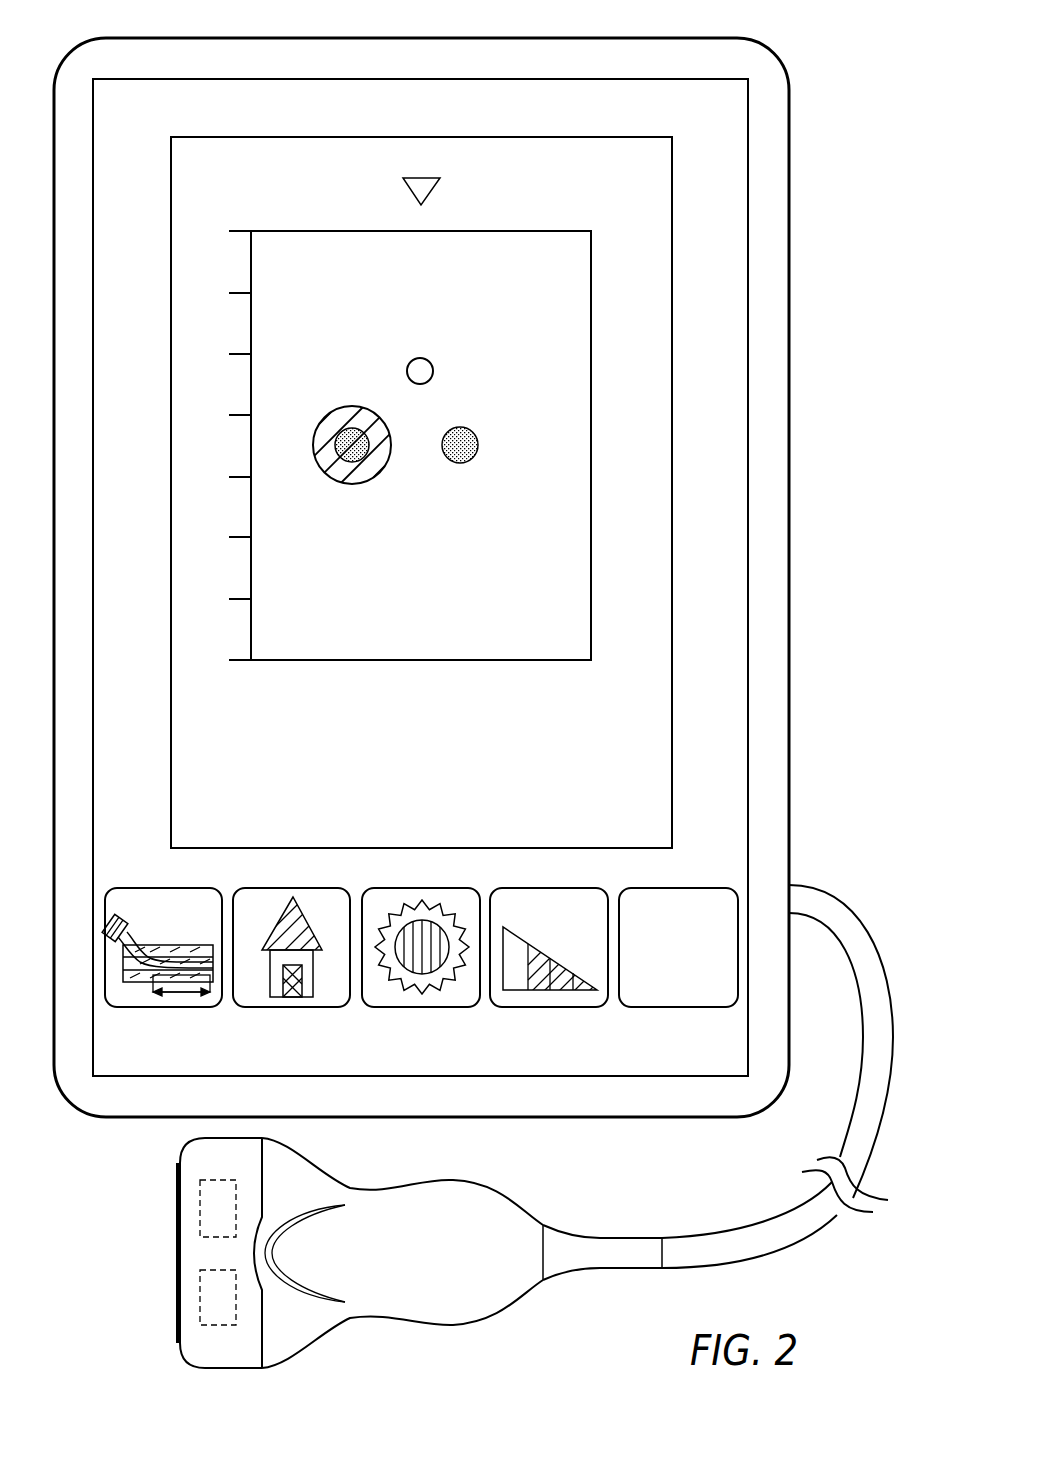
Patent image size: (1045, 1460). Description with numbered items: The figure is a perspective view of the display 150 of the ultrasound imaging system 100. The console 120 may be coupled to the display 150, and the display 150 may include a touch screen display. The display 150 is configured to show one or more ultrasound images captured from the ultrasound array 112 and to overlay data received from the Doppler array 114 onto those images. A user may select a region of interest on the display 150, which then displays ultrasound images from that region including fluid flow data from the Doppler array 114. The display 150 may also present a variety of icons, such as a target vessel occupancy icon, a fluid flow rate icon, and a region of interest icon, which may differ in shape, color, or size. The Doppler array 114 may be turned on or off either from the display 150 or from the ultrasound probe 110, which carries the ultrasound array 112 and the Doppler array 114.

The ultrasound imaging system 100 is at (481, 693).
The display 150 is at (789, 340).
The console 120 is at (818, 594).
The ultrasound probe 110 is at (372, 1260).
The ultrasound array 112 is at (200, 1213).
The Doppler array 114 is at (200, 1303).